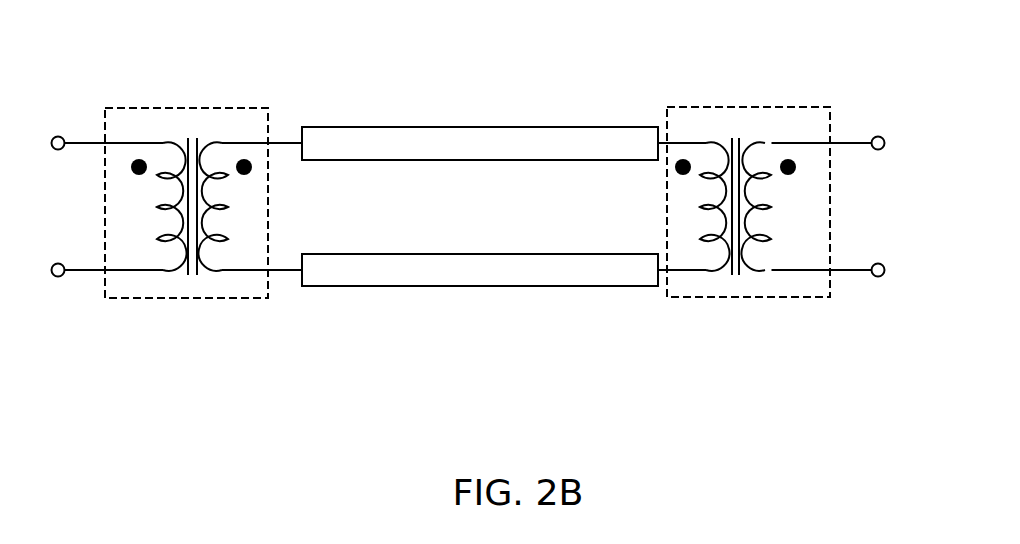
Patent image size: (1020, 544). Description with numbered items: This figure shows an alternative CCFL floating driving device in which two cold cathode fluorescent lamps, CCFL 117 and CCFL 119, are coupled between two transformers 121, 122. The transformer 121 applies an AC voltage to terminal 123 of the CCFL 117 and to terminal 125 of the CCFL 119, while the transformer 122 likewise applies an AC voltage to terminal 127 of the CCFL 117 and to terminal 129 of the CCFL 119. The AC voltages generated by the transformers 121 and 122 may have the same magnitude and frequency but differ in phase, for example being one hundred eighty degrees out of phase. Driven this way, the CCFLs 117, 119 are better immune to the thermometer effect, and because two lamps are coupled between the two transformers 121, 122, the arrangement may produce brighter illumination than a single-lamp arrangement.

The CCFL 117 is at (563, 138).
The CCFL 119 is at (563, 278).
The transformer 121 is at (193, 298).
The transformer 122 is at (740, 298).
The terminal 123 is at (300, 138).
The terminal 125 is at (300, 268).
The terminal 127 is at (662, 140).
The terminal 129 is at (660, 272).